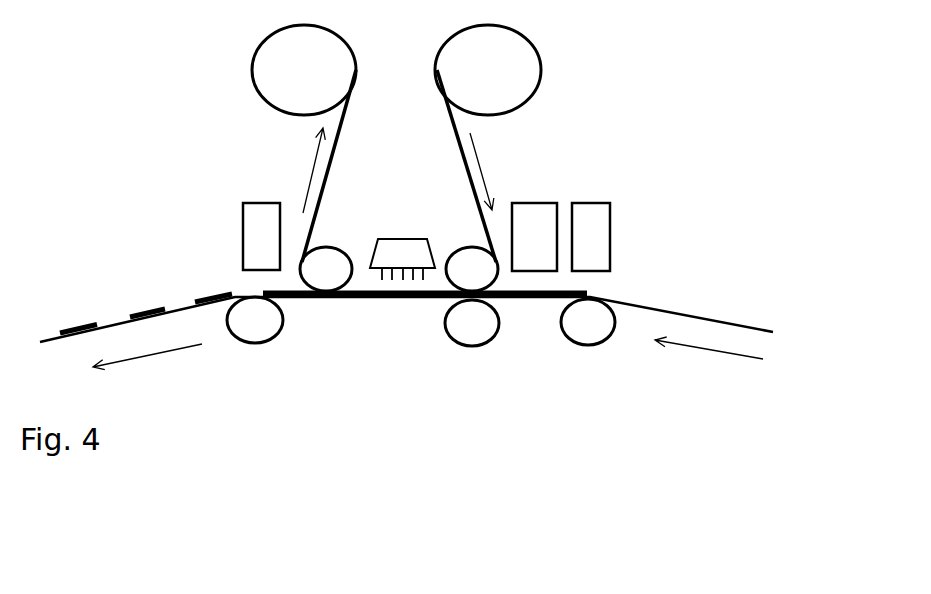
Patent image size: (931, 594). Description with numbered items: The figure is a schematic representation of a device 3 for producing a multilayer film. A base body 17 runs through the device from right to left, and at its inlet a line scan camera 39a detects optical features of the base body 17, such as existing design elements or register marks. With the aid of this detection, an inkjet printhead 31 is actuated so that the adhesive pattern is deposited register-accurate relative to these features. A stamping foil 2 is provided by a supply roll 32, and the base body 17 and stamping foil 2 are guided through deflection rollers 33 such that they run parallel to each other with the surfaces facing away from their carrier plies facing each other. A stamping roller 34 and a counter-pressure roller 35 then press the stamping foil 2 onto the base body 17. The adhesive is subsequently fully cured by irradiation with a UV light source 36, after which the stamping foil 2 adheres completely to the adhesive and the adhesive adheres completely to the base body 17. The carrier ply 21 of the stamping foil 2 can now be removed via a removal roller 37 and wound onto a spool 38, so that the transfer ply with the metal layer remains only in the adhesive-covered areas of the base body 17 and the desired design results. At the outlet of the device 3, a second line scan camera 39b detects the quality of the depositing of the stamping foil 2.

The device 3 is at (689, 49).
The spool 38 is at (262, 66).
The supply roll 32 is at (520, 63).
The carrier ply 21 is at (320, 193).
The stamping foil 2 is at (465, 157).
The line scan camera 39b is at (253, 238).
The inkjet printhead 31 is at (537, 215).
The line scan camera 39a is at (600, 230).
The removal roller 37 is at (332, 262).
The stamping roller 34 is at (465, 260).
The UV light source 36 is at (398, 238).
The base body 17 is at (687, 313).
The deflection rollers 33 is at (250, 327).
The counter-pressure roller 35 is at (470, 328).